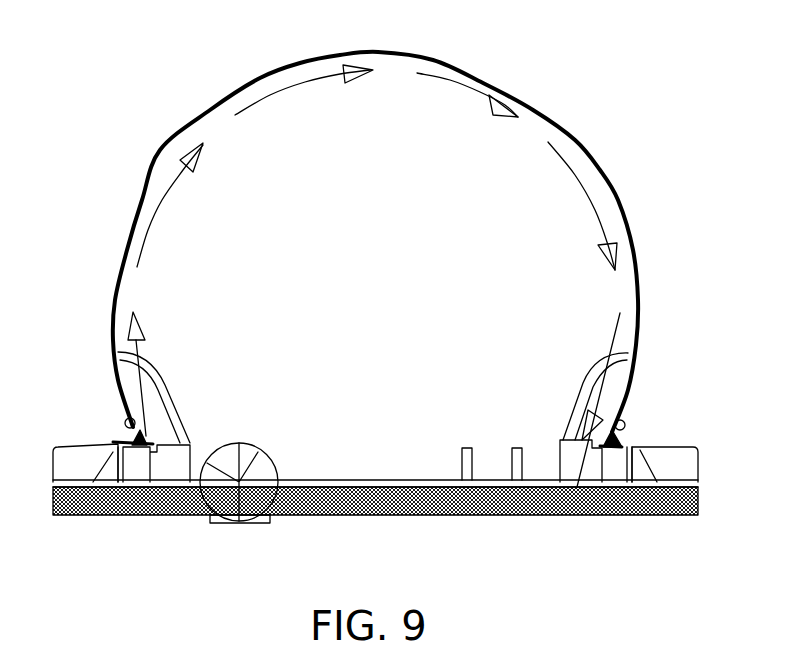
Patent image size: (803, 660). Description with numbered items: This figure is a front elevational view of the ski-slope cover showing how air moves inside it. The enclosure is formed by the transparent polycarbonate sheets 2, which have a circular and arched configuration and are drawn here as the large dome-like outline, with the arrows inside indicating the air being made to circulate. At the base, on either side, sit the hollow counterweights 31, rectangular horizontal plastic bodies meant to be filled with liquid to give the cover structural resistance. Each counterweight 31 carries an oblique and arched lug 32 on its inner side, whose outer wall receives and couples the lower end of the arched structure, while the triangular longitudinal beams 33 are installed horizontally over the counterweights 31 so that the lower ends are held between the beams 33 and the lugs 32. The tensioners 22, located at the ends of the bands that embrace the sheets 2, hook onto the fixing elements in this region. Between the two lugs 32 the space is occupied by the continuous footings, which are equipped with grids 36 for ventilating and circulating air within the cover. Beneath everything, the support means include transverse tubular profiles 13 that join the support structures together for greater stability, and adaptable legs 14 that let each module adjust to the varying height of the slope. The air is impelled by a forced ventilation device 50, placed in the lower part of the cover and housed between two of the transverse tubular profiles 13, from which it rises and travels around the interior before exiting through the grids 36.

The transparent polycarbonate sheets 2 is at (233, 93).
The transverse tubular profiles 13 is at (365, 515).
The adaptable legs 14 is at (503, 517).
The tensioners 22 is at (128, 417).
The hollow counterweights 31 is at (65, 470).
The lug 32 is at (130, 370).
The longitudinal beams 33 is at (133, 437).
The grids 36 is at (177, 445).
The forced ventilation device 50 is at (227, 462).